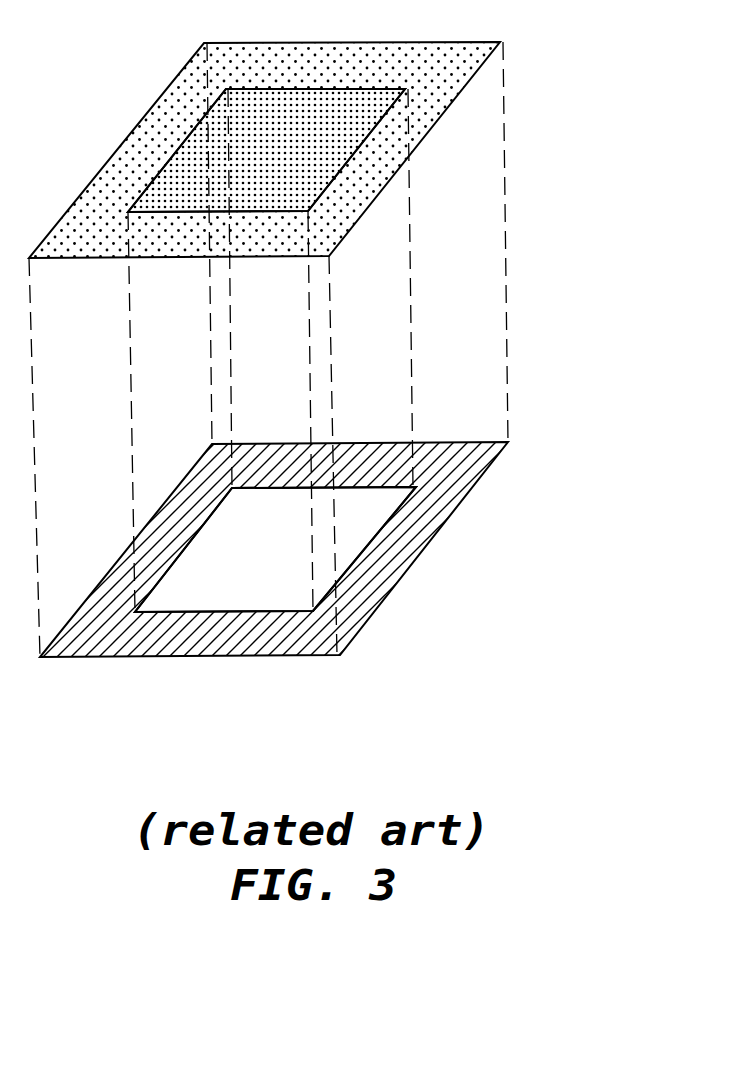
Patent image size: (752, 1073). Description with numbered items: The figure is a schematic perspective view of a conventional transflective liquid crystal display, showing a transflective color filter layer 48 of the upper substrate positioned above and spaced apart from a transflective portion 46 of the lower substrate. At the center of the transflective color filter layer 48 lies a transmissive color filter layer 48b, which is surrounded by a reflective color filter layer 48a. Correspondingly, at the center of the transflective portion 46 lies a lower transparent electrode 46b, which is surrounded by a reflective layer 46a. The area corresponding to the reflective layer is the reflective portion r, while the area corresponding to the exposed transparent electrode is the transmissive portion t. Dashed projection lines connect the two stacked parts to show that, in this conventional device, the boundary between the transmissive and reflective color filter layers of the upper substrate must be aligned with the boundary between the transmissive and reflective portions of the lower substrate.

The transflective color filter layer 48 is at (336, 150).
The reflective color filter layer 48a is at (448, 78).
The transmissive color filter layer 48b is at (348, 137).
The transflective portion 46 is at (348, 549).
The reflective layer 46a is at (452, 482).
The lower transparent electrode 46b is at (352, 538).
The reflective portion r is at (505, 220).
The transmissive portion t is at (410, 300).